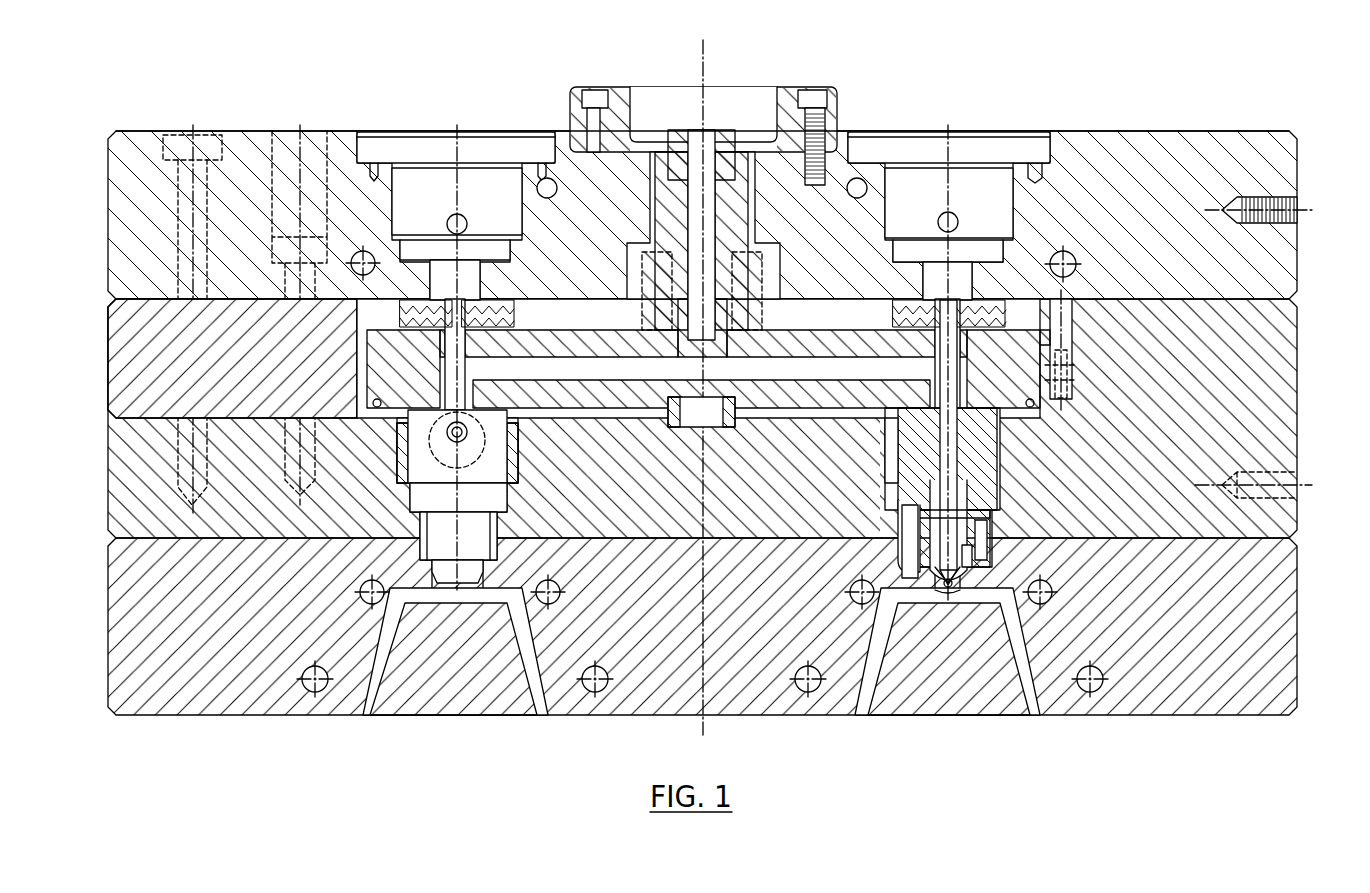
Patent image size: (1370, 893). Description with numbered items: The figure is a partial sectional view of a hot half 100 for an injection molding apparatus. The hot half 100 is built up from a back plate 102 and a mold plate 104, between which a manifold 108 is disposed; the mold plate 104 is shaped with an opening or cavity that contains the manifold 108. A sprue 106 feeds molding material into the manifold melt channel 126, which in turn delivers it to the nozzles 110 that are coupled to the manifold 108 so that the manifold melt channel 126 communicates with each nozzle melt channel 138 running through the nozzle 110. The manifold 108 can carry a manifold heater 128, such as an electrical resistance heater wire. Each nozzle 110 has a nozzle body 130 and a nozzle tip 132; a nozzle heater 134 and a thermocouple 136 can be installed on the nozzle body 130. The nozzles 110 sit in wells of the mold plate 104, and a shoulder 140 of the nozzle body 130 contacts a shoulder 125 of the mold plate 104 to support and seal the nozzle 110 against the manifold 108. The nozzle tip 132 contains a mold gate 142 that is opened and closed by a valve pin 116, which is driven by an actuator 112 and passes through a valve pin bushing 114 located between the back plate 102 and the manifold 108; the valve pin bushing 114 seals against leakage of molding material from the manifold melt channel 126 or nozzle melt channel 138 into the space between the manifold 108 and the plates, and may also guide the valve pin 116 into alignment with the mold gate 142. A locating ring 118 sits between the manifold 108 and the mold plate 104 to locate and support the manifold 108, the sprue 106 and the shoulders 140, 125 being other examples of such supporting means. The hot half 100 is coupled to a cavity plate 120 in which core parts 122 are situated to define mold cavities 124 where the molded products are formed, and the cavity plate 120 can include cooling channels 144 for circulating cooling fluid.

The hot half 100 is at (1146, 101).
The back plate 102 is at (1297, 261).
The mold plate 104 is at (1297, 418).
The sprue 106 is at (772, 316).
The manifold 108 is at (392, 353).
The nozzle 110 is at (970, 485).
The actuator 112 is at (988, 190).
The valve pin bushing 114 is at (1010, 314).
The valve pin 116 is at (953, 500).
The locating ring 118 is at (670, 427).
The cavity plate 120 is at (730, 649).
The core part 122 is at (476, 659).
The mold cavity 124 is at (545, 684).
The shoulder 125 is at (905, 512).
The manifold melt channel 126 is at (563, 365).
The manifold heater 128 is at (377, 407).
The nozzle body 130 is at (983, 458).
The nozzle tip 132 is at (984, 570).
The nozzle heater 134 is at (980, 512).
The thermocouple 136 is at (985, 550).
The nozzle melt channel 138 is at (958, 445).
The shoulder 140 is at (902, 490).
The mold gate 142 is at (930, 688).
The cooling channel 144 is at (1094, 700).